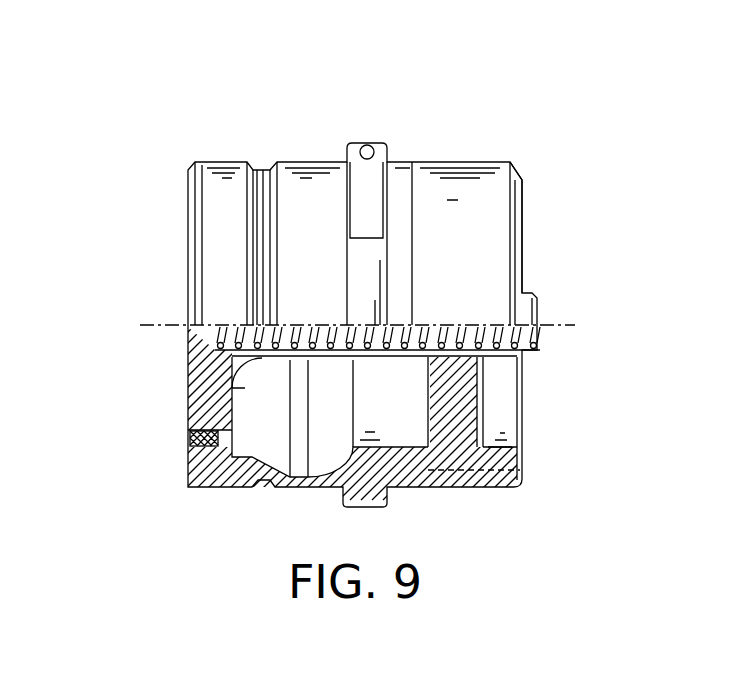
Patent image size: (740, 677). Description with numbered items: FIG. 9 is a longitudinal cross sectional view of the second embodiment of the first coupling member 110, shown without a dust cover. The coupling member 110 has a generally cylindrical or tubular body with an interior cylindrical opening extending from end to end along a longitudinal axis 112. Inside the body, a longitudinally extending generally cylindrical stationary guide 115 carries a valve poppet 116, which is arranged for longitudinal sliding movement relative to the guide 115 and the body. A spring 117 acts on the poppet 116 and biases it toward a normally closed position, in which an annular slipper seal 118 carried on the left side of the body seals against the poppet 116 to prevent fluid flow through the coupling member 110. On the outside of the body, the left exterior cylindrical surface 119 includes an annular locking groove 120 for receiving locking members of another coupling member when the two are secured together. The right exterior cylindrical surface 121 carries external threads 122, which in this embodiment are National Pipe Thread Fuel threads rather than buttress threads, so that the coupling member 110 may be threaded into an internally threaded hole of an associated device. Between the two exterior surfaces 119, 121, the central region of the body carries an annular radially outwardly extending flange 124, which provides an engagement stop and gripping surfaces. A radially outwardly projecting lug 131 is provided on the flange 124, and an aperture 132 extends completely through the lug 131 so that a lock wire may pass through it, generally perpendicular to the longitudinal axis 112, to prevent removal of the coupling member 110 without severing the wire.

The first coupling member 110 is at (451, 90).
The longitudinal axis 112 is at (560, 325).
The stationary guide 115 is at (490, 360).
The valve poppet 116 is at (232, 393).
The spring 117 is at (500, 357).
The annular slipper seal 118 is at (190, 437).
The left exterior cylindrical surface 119 is at (213, 160).
The annular locking groove 120 is at (263, 168).
The right exterior cylindrical surface 121 is at (512, 170).
The external threads 122 is at (480, 167).
The annular flange 124 is at (363, 493).
The lug 131 is at (350, 147).
The aperture 132 is at (363, 147).